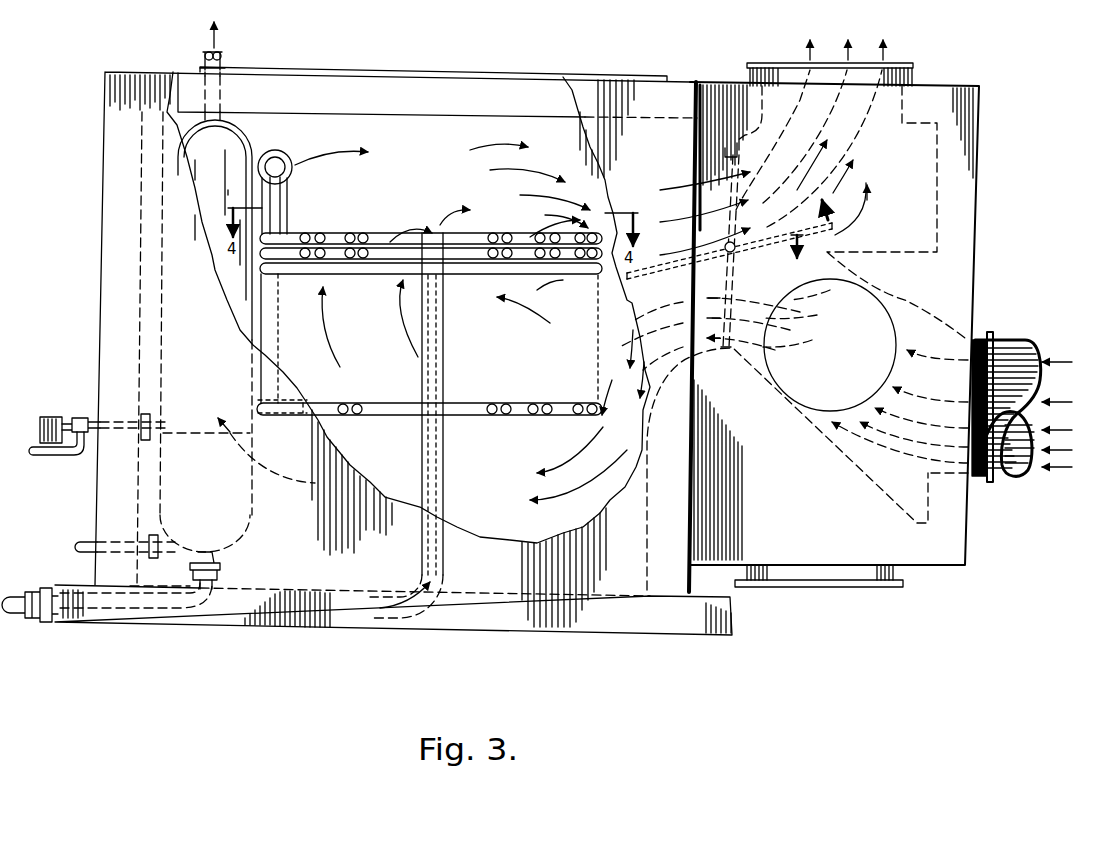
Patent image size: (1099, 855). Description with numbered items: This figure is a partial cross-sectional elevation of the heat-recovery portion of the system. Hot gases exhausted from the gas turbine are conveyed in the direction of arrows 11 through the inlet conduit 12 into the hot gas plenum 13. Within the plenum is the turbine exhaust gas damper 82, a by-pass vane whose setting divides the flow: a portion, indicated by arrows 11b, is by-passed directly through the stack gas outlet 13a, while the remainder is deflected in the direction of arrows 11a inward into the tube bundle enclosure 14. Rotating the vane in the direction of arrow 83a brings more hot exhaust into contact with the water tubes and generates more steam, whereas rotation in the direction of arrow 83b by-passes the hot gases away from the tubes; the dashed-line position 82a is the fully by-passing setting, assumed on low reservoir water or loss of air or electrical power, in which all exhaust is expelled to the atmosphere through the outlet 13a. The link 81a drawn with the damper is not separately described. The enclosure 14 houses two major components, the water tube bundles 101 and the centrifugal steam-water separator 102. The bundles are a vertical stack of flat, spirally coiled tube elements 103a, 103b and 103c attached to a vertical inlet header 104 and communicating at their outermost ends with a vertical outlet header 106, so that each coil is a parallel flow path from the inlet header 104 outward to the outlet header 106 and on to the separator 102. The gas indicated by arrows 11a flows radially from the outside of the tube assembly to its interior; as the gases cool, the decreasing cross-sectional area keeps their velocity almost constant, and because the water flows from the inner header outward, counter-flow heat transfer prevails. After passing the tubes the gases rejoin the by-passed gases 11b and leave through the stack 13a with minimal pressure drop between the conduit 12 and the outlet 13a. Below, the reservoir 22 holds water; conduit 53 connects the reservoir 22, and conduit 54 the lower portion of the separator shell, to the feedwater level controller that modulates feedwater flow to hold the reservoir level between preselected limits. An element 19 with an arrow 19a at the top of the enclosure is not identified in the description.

The hot exhaust gas flow arrows 11 is at (1052, 366).
The deflected gas flow arrows 11a is at (760, 304).
The by-passed gas flow arrows 11b is at (808, 92).
The inlet conduit 12 is at (996, 340).
The hot gas plenum 13 is at (983, 192).
The stack gas outlet 13a is at (905, 74).
The tube bundle enclosure 14 is at (597, 72).
The vent pipe 19 is at (222, 56).
The vent outflow 19a is at (216, 33).
The reservoir 22 is at (232, 535).
The conduit 53 is at (90, 544).
The conduit 54 is at (42, 428).
The damper actuating rod 81a is at (722, 258).
The turbine exhaust gas damper 82 is at (829, 224).
The damper by-pass position 82a is at (738, 156).
The direction arrow 83a is at (783, 249).
The direction arrow 83b is at (841, 204).
The water tube bundles 101 is at (411, 165).
The centrifugal steam-water separator 102 is at (232, 134).
The spiral tube 103a is at (305, 233).
The spiral tube 103b is at (345, 250).
The spiral tube 103c is at (385, 264).
The vertical inlet header 104 is at (438, 485).
The vertical outlet header 106 is at (283, 180).